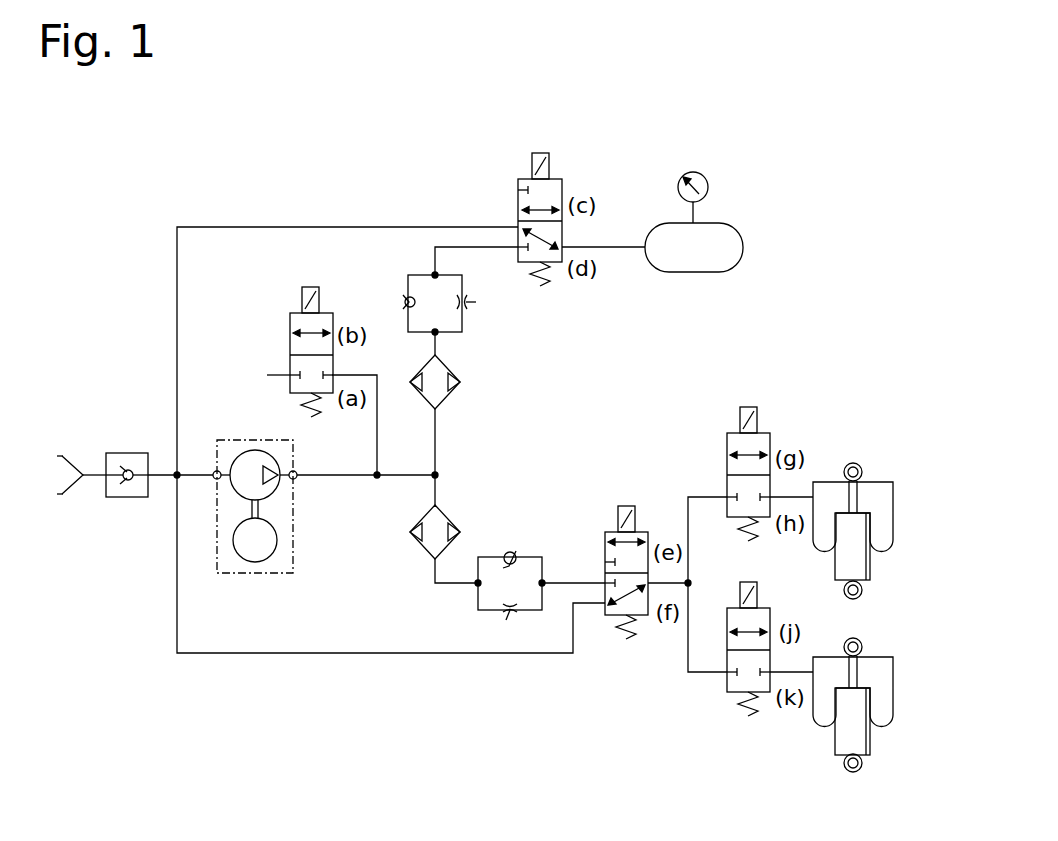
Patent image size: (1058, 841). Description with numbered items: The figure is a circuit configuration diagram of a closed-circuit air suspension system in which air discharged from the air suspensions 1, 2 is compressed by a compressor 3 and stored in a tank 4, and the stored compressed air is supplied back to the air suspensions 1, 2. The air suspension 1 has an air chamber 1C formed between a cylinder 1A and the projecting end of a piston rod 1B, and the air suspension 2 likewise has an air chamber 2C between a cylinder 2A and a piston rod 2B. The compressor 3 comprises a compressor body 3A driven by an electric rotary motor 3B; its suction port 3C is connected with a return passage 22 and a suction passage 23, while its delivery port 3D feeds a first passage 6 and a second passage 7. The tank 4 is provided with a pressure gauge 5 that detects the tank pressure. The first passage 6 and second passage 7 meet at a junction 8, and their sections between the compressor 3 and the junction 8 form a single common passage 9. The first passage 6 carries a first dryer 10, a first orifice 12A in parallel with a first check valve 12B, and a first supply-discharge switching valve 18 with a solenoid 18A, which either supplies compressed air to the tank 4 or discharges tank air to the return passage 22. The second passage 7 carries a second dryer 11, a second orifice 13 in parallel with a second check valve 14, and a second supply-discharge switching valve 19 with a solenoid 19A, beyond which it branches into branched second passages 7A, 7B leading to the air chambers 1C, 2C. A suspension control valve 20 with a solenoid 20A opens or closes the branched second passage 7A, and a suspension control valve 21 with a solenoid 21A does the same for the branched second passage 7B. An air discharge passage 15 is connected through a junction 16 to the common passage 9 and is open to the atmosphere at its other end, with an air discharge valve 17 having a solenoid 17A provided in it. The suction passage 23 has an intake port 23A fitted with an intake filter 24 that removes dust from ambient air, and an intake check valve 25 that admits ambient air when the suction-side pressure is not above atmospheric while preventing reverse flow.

The air suspension 1 is at (855, 489).
The cylinder 1A is at (862, 560).
The piston rod 1B is at (846, 495).
The air chamber 1C is at (880, 497).
The air suspension 2 is at (851, 678).
The cylinder 2A is at (862, 730).
The piston rod 2B is at (856, 676).
The air chamber 2C is at (825, 710).
The compressor 3 is at (294, 545).
The compressor body 3A is at (252, 448).
The electric rotary motor 3B is at (255, 562).
The suction port 3C is at (215, 471).
The delivery port 3D is at (296, 478).
The tank 4 is at (745, 247).
The pressure gauge 5 is at (710, 187).
The first passage 6 is at (440, 446).
The second passage 7 is at (435, 577).
The branched second passage 7A is at (700, 497).
The branched second passage 7B is at (688, 645).
The junction 8 is at (440, 476).
The common passage 9 is at (336, 470).
The first dryer 10 is at (462, 383).
The second dryer 11 is at (421, 545).
The first orifice 12A is at (468, 301).
The first check valve 12B is at (404, 305).
The second orifice 13 is at (511, 614).
The second check valve 14 is at (513, 549).
The air discharge passage 15 is at (378, 410).
The junction 16 is at (377, 479).
The air discharge valve 17 is at (289, 345).
The solenoid 17A is at (314, 287).
The first supply-discharge switching valve 18 is at (517, 198).
The solenoid 18A is at (549, 163).
The second supply-discharge switching valve 19 is at (604, 547).
The solenoid 19A is at (626, 505).
The suspension control valve 20 is at (726, 440).
The solenoid 20A is at (748, 407).
The suspension control valve 21 is at (726, 688).
The solenoid 21A is at (740, 605).
The return passage 22 is at (266, 655).
The suction passage 23 is at (163, 473).
The intake port 23A is at (63, 493).
The intake filter 24 is at (62, 477).
The intake check valve 25 is at (127, 497).